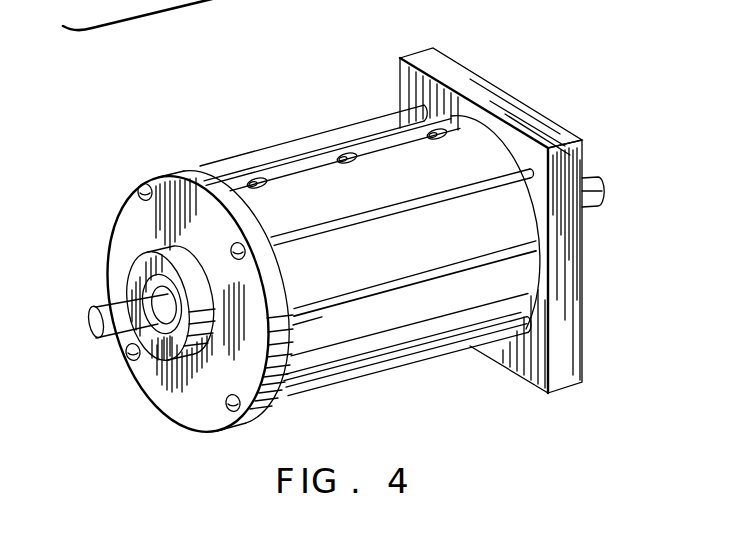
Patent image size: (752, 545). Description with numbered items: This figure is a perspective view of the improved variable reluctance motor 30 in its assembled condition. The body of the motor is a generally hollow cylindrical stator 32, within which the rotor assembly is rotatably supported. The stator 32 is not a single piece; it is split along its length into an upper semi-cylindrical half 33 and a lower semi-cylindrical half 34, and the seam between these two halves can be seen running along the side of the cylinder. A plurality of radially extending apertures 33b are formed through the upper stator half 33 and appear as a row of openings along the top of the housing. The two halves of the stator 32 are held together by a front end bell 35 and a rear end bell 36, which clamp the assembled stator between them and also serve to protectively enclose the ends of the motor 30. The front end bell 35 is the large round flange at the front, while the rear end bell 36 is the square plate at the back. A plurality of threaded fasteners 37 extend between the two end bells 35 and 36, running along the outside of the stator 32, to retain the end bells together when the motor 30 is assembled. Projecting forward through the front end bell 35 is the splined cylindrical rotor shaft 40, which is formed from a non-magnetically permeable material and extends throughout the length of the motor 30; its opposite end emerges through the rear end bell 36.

The variable reluctance motor 30 is at (537, 71).
The stator 32 is at (432, 335).
The upper stator half 33 is at (396, 273).
The apertures 33b is at (344, 162).
The lower stator half 34 is at (360, 343).
The front end bell 35 is at (192, 182).
The rear end bell 36 is at (555, 127).
The threaded fasteners 37 is at (288, 150).
The rotor shaft 40 is at (108, 310).